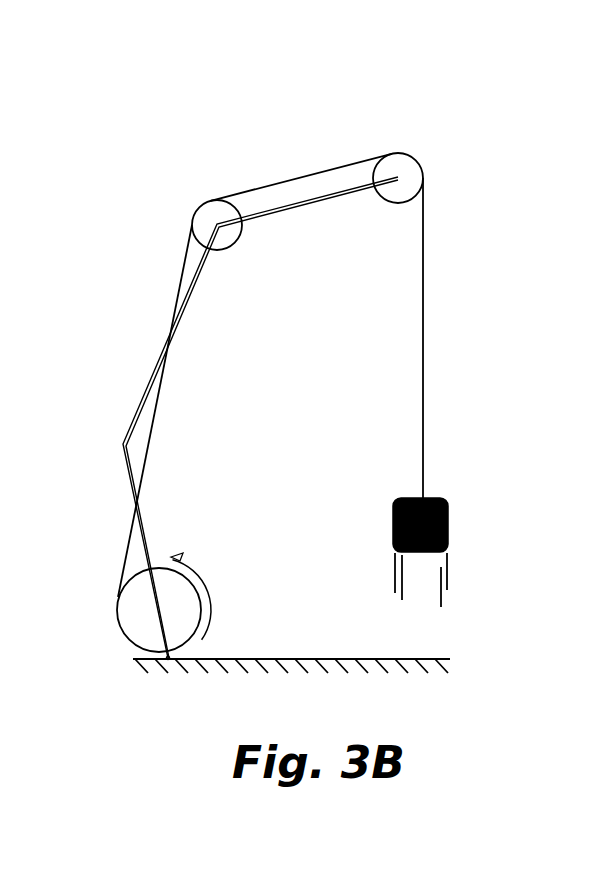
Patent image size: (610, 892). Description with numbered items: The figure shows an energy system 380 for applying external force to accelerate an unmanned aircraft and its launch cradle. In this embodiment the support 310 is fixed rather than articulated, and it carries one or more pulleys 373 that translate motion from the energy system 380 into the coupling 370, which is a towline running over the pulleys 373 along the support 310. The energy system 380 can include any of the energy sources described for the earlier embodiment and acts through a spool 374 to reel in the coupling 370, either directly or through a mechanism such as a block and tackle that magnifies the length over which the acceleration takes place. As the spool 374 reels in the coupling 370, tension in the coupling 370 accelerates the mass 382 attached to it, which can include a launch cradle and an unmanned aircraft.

The support 310 is at (178, 323).
The coupling 370 is at (425, 352).
The pulleys 373 is at (207, 202).
The spool 374 is at (187, 630).
The energy system 380 is at (507, 208).
The mass 382 is at (448, 530).